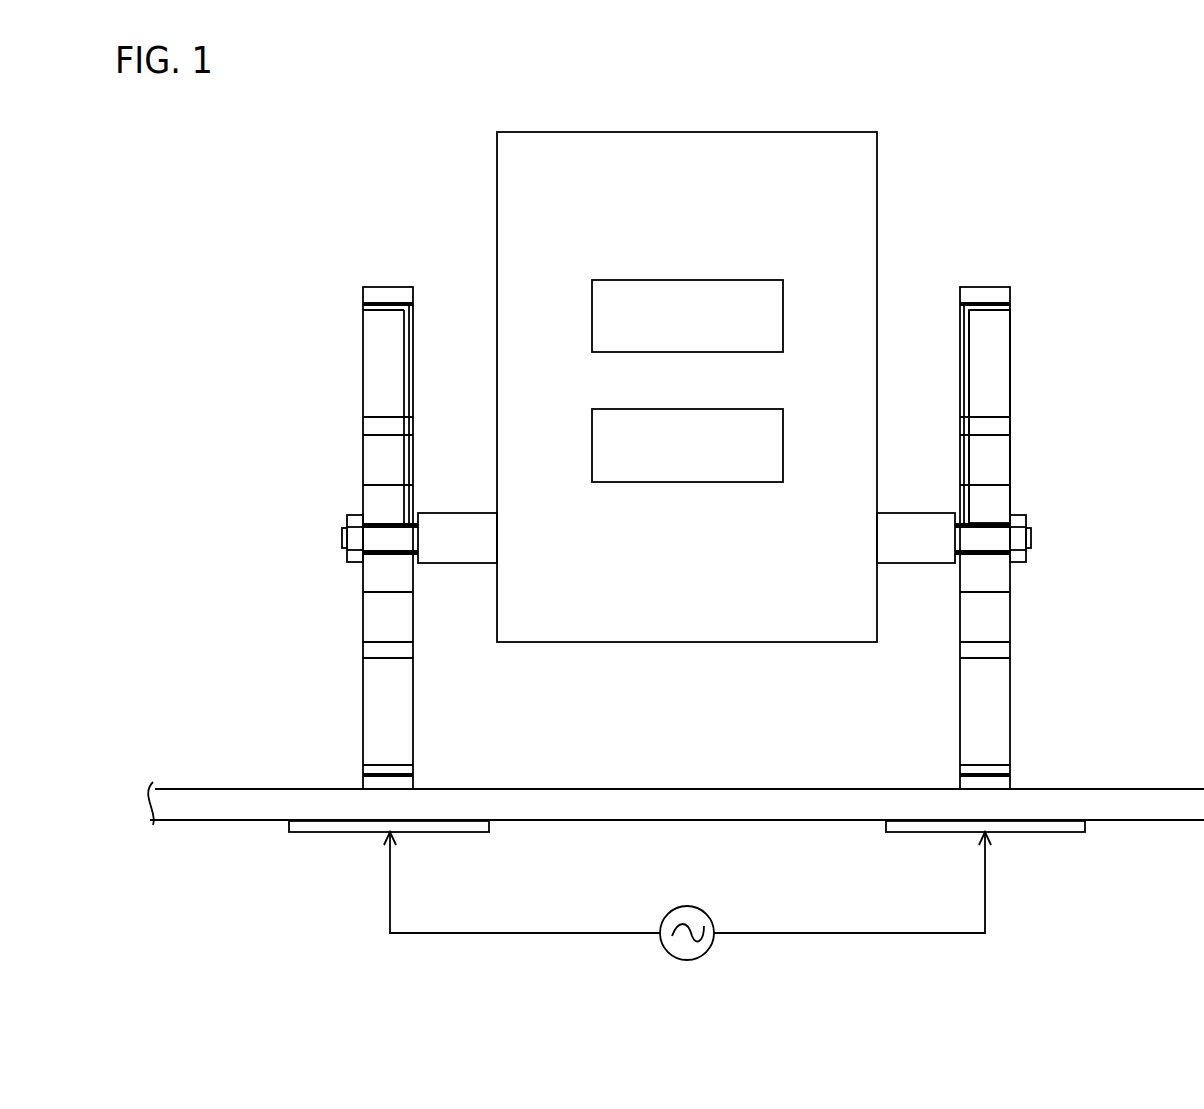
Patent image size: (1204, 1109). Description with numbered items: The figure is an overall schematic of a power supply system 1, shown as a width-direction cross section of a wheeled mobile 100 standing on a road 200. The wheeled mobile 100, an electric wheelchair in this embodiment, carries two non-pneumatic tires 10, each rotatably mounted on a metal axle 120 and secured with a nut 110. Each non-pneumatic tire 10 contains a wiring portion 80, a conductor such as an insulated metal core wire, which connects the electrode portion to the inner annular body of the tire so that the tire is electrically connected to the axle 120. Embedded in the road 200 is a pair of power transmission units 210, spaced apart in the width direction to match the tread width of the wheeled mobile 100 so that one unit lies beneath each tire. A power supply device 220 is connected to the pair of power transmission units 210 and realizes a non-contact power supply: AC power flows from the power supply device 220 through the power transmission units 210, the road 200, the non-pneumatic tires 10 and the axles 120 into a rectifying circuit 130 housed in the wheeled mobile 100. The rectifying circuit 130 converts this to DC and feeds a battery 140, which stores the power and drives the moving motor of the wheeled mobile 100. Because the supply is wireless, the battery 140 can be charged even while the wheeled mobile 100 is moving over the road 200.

The power supply system 1 is at (1020, 123).
The non-pneumatic tire 10 is at (388, 287).
The wiring portion 80 is at (972, 367).
The wheeled mobile 100 is at (793, 132).
The nut 110 is at (1023, 517).
The axle 120 is at (1032, 537).
The rectifying circuit 130 is at (760, 409).
The battery 140 is at (760, 280).
The road 200 is at (1150, 820).
The power transmission unit 210 is at (452, 832).
The power supply device 220 is at (695, 908).